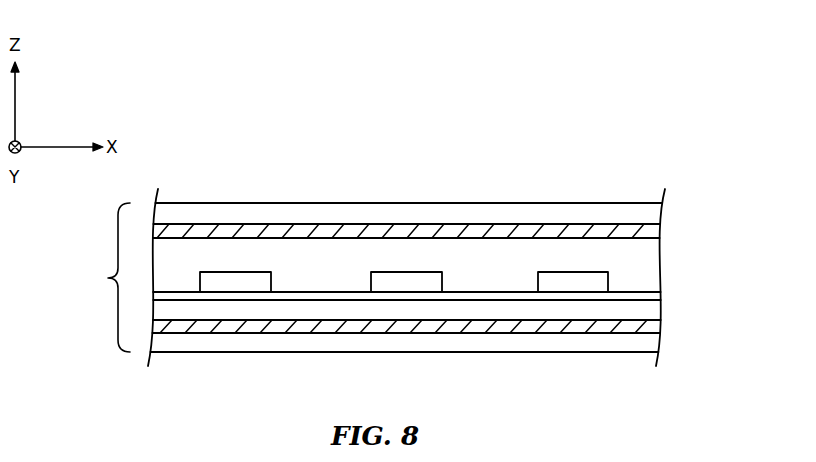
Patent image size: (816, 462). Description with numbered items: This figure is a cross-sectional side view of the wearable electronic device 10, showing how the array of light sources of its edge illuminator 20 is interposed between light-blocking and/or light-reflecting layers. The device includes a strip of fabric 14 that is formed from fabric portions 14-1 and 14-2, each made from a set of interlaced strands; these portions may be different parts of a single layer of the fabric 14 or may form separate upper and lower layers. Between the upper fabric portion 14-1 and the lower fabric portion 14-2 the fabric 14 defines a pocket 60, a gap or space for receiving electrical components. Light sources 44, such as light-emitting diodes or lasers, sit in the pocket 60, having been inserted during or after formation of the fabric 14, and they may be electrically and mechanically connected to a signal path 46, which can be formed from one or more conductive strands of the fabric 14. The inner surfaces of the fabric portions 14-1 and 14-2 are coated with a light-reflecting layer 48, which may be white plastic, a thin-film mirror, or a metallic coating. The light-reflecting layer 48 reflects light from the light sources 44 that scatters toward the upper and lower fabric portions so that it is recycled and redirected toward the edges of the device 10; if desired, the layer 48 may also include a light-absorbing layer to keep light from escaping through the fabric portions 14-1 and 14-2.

The electronic device 10 is at (578, 88).
The edge illuminator 20 is at (319, 195).
The fabric 14 is at (105, 277).
The fabric portion 14-1 is at (652, 212).
The fabric portion 14-2 is at (652, 347).
The light-reflecting layer 48 is at (647, 232).
The pocket 60 is at (650, 260).
The signal path 46 is at (495, 292).
The light sources 44 is at (571, 282).